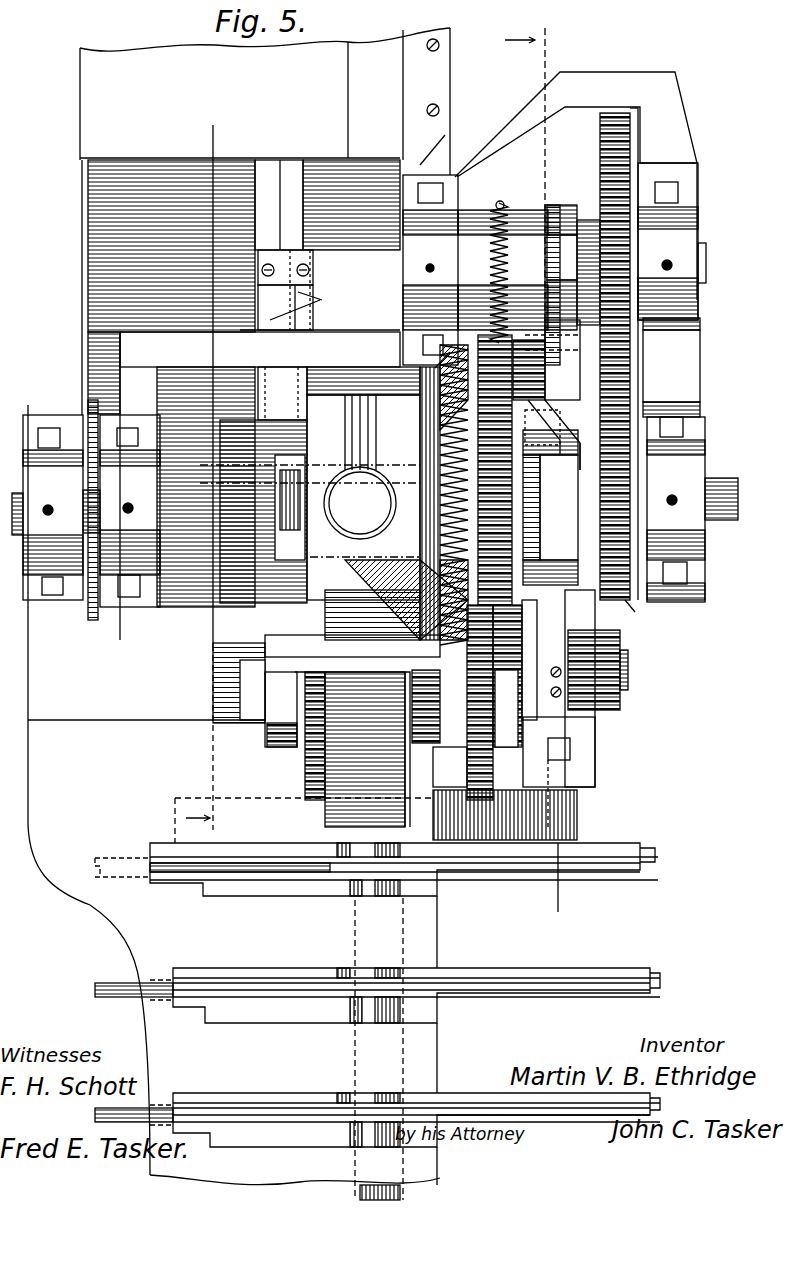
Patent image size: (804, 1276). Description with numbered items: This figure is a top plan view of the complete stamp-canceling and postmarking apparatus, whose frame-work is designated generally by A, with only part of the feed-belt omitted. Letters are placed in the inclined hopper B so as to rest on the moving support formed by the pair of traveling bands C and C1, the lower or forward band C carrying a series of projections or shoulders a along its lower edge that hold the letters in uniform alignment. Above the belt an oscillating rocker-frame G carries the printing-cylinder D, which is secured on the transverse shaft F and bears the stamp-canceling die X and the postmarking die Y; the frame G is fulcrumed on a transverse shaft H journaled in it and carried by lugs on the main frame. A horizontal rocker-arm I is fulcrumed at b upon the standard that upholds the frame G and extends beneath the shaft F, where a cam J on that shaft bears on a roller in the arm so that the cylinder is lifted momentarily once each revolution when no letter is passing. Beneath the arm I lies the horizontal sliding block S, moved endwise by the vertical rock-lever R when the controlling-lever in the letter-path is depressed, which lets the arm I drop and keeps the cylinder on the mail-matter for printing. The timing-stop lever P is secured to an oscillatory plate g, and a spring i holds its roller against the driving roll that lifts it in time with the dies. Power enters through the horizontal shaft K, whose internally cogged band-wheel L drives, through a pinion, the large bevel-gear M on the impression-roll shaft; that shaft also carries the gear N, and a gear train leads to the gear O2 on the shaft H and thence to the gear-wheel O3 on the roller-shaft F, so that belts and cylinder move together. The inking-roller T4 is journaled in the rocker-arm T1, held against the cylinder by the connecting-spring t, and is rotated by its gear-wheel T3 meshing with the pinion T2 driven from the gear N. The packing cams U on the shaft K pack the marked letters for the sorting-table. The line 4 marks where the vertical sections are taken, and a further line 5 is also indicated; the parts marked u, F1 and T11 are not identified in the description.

The inclined hopper B is at (265, 101).
The section line 5 is at (305, 484).
The section line 4 4 is at (538, 474).
The traveling belt C1 is at (168, 287).
The traveling band C is at (350, 238).
The timing-stop lever P is at (320, 290).
The oscillatory plate g is at (301, 302).
The transverse shaft H is at (403, 272).
The projections or shoulders a is at (435, 263).
The rocker-frame G is at (410, 356).
The gear O2 is at (600, 148).
The gear-wheel O3 is at (638, 617).
The connecting-spring t is at (505, 273).
The spring i is at (502, 210).
The fulcrum b is at (560, 360).
The rocker-arm I is at (529, 371).
The sliding block S is at (560, 432).
The rock-lever R is at (589, 445).
The gear N is at (500, 585).
The bevel-gear M is at (460, 455).
The cam J is at (550, 507).
The stamp-canceling die X is at (288, 487).
The slot u is at (281, 393).
The printing-cylinder D is at (363, 497).
The postmarking-die Y is at (370, 520).
The transverse shaft F is at (75, 498).
The bearing F' F1 is at (712, 480).
The shaft collar T'' T11 is at (326, 656).
The inking-roller T4 is at (310, 758).
The gear-wheel T3 is at (450, 767).
The band-wheel L is at (578, 815).
The rocker-arm T1 is at (575, 703).
The pinion T2 is at (507, 640).
The frame-work A is at (234, 802).
The horizontal shaft K is at (400, 878).
The packing cams U is at (622, 872).